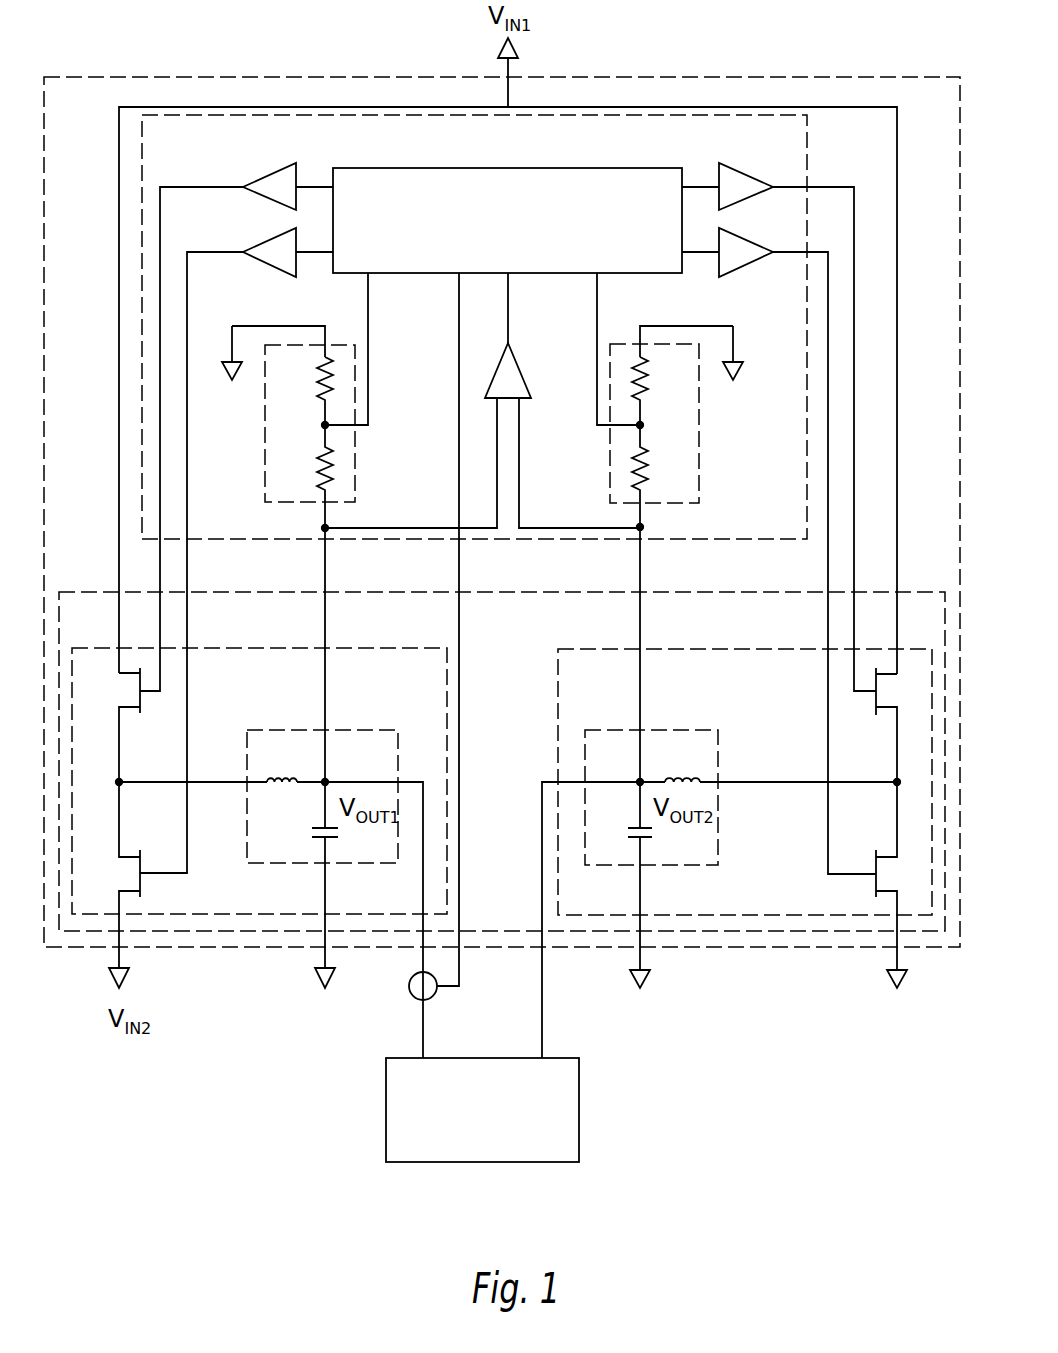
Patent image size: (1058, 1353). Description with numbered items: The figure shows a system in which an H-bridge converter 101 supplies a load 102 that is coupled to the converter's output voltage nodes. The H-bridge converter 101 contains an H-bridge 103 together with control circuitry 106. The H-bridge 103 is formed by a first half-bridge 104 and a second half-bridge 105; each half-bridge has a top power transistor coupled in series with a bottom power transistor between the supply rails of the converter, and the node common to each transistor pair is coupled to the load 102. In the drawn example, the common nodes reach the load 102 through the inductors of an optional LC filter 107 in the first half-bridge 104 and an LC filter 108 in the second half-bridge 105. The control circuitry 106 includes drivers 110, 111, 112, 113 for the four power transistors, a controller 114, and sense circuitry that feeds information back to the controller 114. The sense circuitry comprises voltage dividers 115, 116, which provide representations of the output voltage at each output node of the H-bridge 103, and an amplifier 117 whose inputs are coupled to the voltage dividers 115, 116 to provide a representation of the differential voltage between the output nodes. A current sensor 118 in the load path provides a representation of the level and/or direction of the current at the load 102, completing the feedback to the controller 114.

The H-bridge converter 101 is at (642, 77).
The load 102 is at (483, 1163).
The H-bridge 103 is at (500, 592).
The first half-bridge 104 is at (258, 648).
The second half-bridge 105 is at (743, 649).
The control circuitry 106 is at (808, 140).
The inductor-capacitor (LC) filter 107 is at (385, 730).
The inductor-capacitor (LC) filter 108 is at (706, 730).
The driver 110 is at (267, 172).
The driver 111 is at (267, 238).
The driver 112 is at (748, 172).
The driver 113 is at (748, 239).
The controller 114 is at (507, 168).
The voltage divider 115 is at (265, 425).
The voltage divider 116 is at (700, 425).
The amplifier 117 is at (520, 367).
The current sensor 118 is at (408, 986).